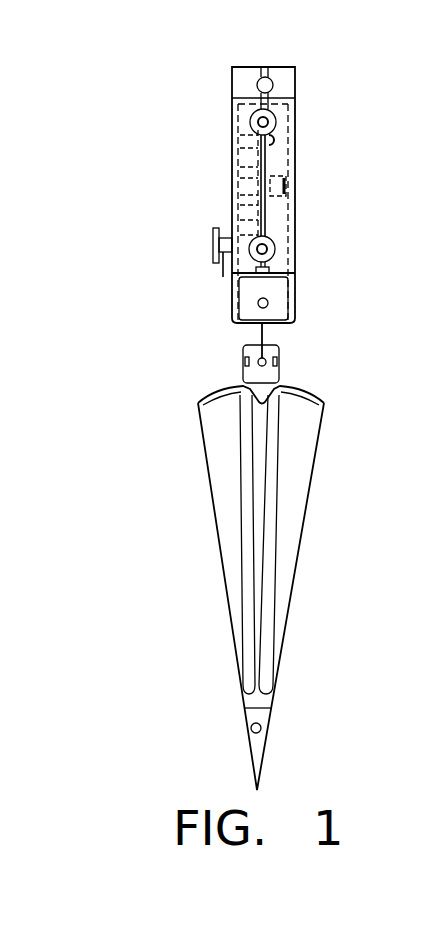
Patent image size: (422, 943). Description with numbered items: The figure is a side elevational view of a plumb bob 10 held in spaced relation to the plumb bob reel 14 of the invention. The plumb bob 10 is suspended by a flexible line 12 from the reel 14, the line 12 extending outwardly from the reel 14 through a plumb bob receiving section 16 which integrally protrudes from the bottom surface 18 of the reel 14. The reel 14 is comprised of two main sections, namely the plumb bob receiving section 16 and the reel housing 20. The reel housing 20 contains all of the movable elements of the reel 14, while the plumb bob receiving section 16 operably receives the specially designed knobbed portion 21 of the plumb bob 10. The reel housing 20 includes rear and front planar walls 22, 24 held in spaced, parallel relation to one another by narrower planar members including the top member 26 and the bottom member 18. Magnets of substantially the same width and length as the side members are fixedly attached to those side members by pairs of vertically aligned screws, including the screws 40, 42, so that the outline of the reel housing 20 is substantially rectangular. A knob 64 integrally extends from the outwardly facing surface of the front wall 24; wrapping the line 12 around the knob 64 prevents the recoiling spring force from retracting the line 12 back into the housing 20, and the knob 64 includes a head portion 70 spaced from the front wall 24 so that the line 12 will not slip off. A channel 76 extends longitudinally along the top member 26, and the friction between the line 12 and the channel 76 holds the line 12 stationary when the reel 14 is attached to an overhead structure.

The plumb bob 10 is at (293, 495).
The flexible line 12 is at (262, 333).
The reel 14 is at (320, 149).
The plumb bob receiving section 16 is at (295, 297).
The bottom surface 18 is at (295, 272).
The reel housing 20 is at (295, 98).
The knobbed portion 21 is at (243, 350).
The rear planar wall 22 is at (232, 162).
The front planar wall 24 is at (296, 207).
The top member 26 is at (242, 67).
The screw 40 is at (251, 117).
The screw 42 is at (250, 243).
The knob 64 is at (222, 277).
The head portion 70 is at (213, 252).
The channel 76 is at (266, 67).